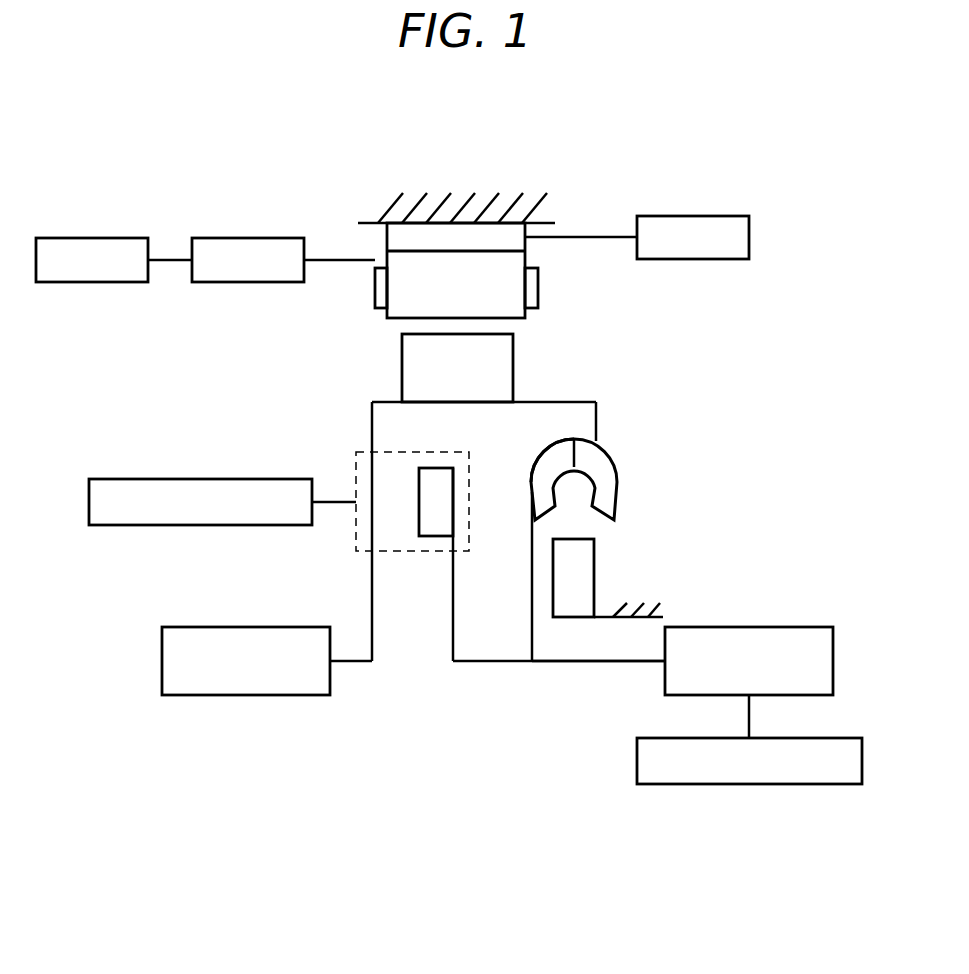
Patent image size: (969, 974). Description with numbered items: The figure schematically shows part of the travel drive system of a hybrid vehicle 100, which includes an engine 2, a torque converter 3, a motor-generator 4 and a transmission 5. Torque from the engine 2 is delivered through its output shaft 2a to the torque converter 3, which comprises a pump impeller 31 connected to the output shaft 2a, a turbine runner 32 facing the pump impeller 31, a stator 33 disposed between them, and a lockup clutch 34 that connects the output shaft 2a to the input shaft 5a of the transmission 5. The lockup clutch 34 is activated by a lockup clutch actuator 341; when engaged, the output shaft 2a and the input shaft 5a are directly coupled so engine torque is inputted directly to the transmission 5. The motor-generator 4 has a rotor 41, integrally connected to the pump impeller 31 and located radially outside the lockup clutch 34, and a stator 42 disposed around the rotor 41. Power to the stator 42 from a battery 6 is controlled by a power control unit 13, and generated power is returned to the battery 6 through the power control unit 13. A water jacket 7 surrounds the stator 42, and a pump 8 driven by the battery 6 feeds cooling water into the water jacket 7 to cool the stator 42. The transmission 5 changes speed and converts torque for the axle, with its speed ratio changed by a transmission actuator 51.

The hybrid vehicle 100 is at (630, 156).
The battery 6 is at (128, 238).
The power control unit 13 is at (282, 238).
The water jacket 7 is at (464, 225).
The pump 8 is at (730, 216).
The motor-generator 4 is at (513, 312).
The stator 42 is at (538, 288).
The rotor 41 is at (513, 358).
The torque converter 3 is at (636, 467).
The pump impeller 31 is at (608, 462).
The turbine runner 32 is at (543, 462).
The stator 33 is at (594, 572).
The lockup clutch 34 is at (356, 465).
The lockup clutch actuator 341 is at (100, 479).
The engine 2 is at (305, 627).
The output shaft 2a is at (350, 665).
The input shaft 5a is at (578, 665).
The transmission 5 is at (807, 627).
The transmission actuator 51 is at (825, 784).